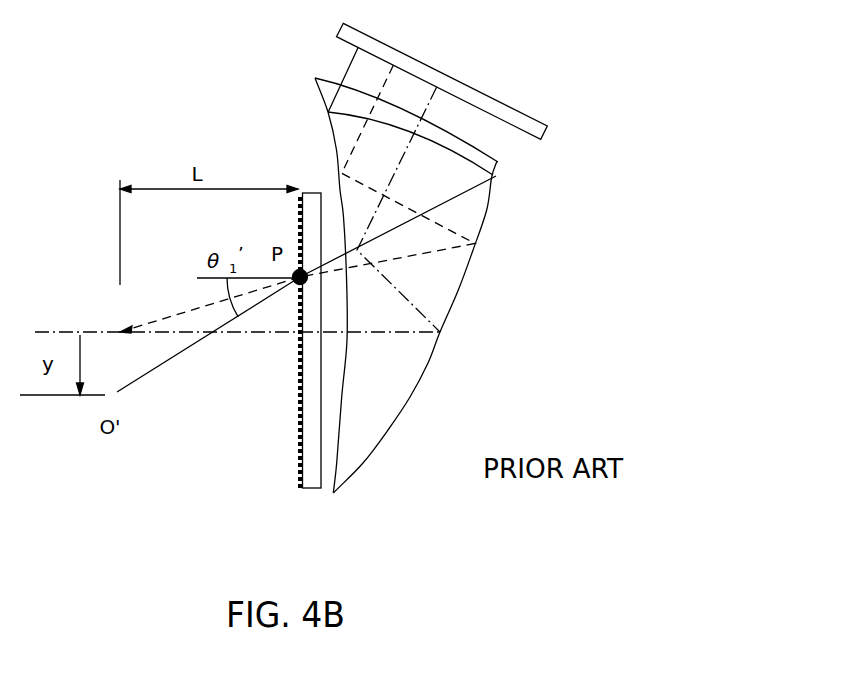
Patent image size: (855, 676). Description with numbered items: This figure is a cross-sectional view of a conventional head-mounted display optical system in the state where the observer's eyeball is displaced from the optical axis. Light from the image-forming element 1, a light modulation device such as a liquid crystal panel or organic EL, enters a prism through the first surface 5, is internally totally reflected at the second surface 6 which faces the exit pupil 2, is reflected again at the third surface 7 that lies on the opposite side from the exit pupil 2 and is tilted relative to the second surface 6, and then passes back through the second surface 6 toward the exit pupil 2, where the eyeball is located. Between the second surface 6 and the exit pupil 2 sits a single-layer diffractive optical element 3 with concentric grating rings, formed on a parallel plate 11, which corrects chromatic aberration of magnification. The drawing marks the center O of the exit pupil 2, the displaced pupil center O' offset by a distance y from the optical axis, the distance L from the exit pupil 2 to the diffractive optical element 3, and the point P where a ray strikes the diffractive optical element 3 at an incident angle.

The image-forming element 1 is at (482, 90).
The exit pupil 2 is at (105, 285).
The diffractive optical element 3 is at (284, 416).
The first surface 5 is at (418, 112).
The second surface 6 is at (338, 190).
The third surface 7 is at (485, 213).
The parallel plate 11 is at (313, 460).